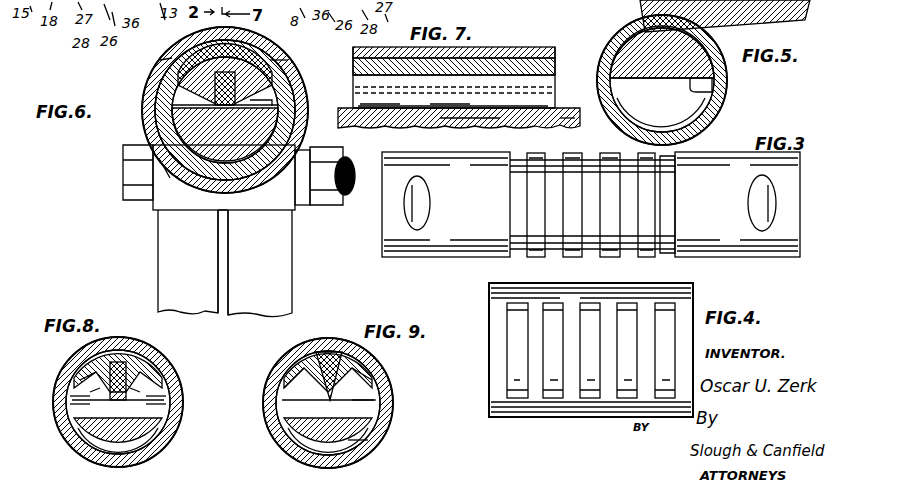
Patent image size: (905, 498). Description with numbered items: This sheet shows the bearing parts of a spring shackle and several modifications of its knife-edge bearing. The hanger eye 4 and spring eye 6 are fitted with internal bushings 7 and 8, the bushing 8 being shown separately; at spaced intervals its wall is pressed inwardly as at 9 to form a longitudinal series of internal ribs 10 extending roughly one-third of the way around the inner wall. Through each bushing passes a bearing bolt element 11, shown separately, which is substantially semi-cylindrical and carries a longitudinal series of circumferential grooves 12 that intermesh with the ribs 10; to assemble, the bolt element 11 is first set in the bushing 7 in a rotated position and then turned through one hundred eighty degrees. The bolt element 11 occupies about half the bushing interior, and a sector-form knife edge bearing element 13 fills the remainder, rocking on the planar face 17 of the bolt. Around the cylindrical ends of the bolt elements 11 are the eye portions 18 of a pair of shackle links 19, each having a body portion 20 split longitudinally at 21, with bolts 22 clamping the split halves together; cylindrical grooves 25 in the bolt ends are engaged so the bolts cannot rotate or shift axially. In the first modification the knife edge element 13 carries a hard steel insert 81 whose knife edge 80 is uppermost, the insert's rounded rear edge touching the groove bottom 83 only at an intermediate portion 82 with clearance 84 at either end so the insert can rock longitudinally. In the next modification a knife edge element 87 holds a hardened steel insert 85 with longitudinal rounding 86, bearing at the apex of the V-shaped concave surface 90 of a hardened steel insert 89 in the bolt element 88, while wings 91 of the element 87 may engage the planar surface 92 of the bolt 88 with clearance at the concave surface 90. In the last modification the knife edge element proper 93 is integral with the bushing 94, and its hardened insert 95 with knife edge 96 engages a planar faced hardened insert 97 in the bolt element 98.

In FIG. 6, the hanger eye 4 is at (162, 72).
In FIG. 6, the spring eye 6 is at (166, 58).
In FIG. 6, the bushing 7 is at (160, 86).
In FIG. 7, the bushing 7 is at (400, 47).
In FIG. 5, the bushing 7 is at (722, 98).
In FIG. 4, the bushing 8 is at (526, 414).
In FIG. 6, the pressed-in wall portions 9 is at (258, 165).
In FIG. 4, the pressed-in wall portions 9 is at (590, 395).
In FIG. 8, the pressed-in wall portions 9 is at (150, 452).
In FIG. 9, the pressed-in wall portions 9 is at (350, 456).
In FIG. 6, the internal ribs 10 is at (172, 181).
In FIG. 5, the internal ribs 10 is at (626, 124).
In FIG. 3, the internal ribs 10 is at (590, 256).
In FIG. 4, the internal ribs 10 is at (590, 320).
In FIG. 8, the internal ribs 10 is at (92, 452).
In FIG. 9, the internal ribs 10 is at (300, 452).
In FIG. 6, the bearing bolt element 11 is at (212, 198).
In FIG. 7, the bearing bolt element 11 is at (437, 122).
In FIG. 5, the bearing bolt element 11 is at (628, 52).
In FIG. 3, the bearing bolt element 11 is at (460, 238).
In FIG. 6, the circumferential grooves 12 is at (160, 118).
In FIG. 7, the circumferential grooves 12 is at (555, 122).
In FIG. 5, the circumferential grooves 12 is at (640, 22).
In FIG. 8, the circumferential grooves 12 is at (70, 418).
In FIG. 9, the circumferential grooves 12 is at (280, 418).
In FIG. 6, the knife edge bearing element 13 is at (285, 58).
In FIG. 6, the planar face 17 is at (280, 104).
In FIG. 7, the planar face 17 is at (352, 97).
In FIG. 5, the planar face 17 is at (720, 84).
In FIG. 6, the eye portion 18 is at (150, 157).
In FIG. 6, the shackle link 19 is at (165, 265).
In FIG. 6, the body portion 20 is at (285, 280).
In FIG. 6, the split 21 is at (228, 252).
In FIG. 6, the bolt 22 is at (128, 190).
In FIG. 3, the cylindrical groove 25 is at (417, 207).
In FIG. 6, the knife edge 80 is at (240, 78).
In FIG. 7, the knife edge 80 is at (355, 82).
In FIG. 6, the hard steel insert 81 is at (210, 100).
In FIG. 7, the hard steel insert 81 is at (486, 120).
In FIG. 7, the intermediate portion 82 is at (468, 58).
In FIG. 7, the groove bottom 83 is at (540, 47).
In FIG. 7, the clearance 84 is at (350, 65).
In FIG. 8, the hardened steel insert 85 is at (150, 378).
In FIG. 8, the longitudinal rounding 86 is at (128, 350).
In FIG. 8, the knife edge element 87 is at (82, 360).
In FIG. 8, the bolt element 88 is at (168, 412).
In FIG. 8, the hardened steel insert 89 is at (166, 396).
In FIG. 8, the V-shaped concave surface 90 is at (70, 396).
In FIG. 8, the wings 91 is at (72, 384).
In FIG. 8, the planar surface 92 is at (70, 404).
In FIG. 9, the knife edge element proper 93 is at (320, 350).
In FIG. 9, the bushing 94 is at (380, 380).
In FIG. 9, the hardened insert 95 is at (358, 372).
In FIG. 9, the knife edge 96 is at (290, 390).
In FIG. 9, the planar faced hardened insert 97 is at (365, 448).
In FIG. 9, the bolt element 98 is at (378, 410).